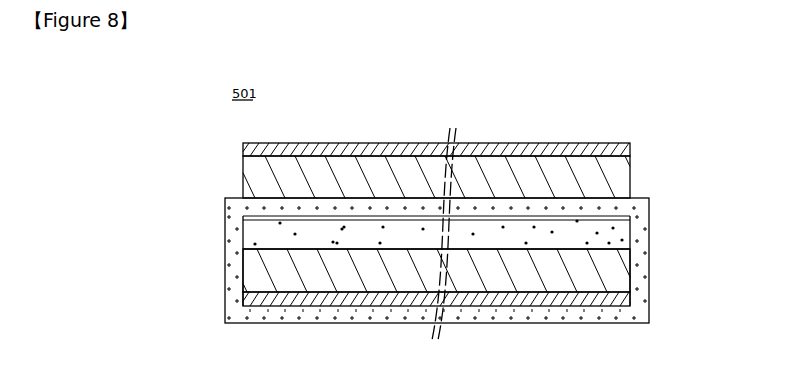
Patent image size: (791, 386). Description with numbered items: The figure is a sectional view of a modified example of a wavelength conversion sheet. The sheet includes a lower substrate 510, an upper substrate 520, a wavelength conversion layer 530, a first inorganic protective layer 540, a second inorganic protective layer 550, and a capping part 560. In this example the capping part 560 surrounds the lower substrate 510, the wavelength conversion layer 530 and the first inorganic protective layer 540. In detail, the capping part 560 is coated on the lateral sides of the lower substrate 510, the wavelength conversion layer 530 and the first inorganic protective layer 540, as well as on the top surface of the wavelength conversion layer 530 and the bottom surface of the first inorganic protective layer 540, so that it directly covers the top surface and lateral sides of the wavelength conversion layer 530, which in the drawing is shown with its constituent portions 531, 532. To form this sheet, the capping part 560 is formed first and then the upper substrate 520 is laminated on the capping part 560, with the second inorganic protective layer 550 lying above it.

The lower substrate 510 is at (622, 270).
The upper substrate 520 is at (630, 176).
The wavelength conversion layer 530 is at (482, 231).
The electrolyte 531 is at (621, 240).
The separator 532 is at (630, 222).
The first inorganic protective layer 540 is at (630, 300).
The second inorganic protective layer 550 is at (630, 148).
The capping part 560 is at (520, 313).